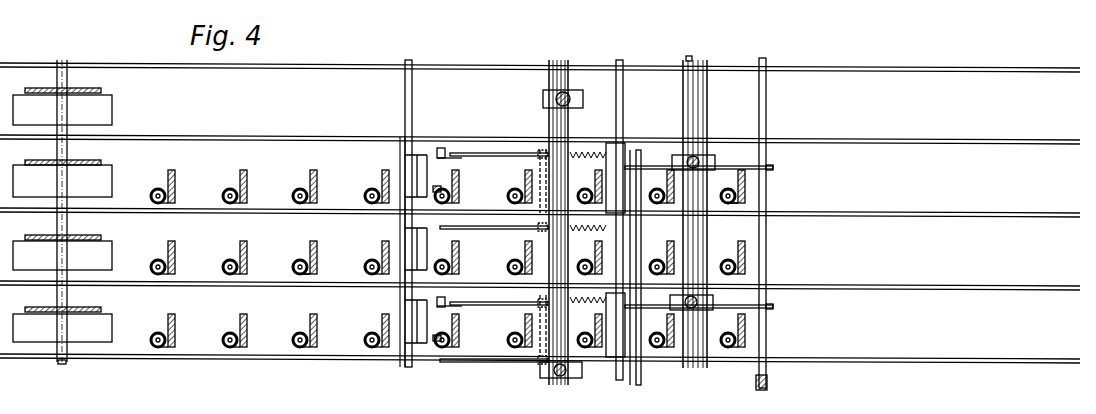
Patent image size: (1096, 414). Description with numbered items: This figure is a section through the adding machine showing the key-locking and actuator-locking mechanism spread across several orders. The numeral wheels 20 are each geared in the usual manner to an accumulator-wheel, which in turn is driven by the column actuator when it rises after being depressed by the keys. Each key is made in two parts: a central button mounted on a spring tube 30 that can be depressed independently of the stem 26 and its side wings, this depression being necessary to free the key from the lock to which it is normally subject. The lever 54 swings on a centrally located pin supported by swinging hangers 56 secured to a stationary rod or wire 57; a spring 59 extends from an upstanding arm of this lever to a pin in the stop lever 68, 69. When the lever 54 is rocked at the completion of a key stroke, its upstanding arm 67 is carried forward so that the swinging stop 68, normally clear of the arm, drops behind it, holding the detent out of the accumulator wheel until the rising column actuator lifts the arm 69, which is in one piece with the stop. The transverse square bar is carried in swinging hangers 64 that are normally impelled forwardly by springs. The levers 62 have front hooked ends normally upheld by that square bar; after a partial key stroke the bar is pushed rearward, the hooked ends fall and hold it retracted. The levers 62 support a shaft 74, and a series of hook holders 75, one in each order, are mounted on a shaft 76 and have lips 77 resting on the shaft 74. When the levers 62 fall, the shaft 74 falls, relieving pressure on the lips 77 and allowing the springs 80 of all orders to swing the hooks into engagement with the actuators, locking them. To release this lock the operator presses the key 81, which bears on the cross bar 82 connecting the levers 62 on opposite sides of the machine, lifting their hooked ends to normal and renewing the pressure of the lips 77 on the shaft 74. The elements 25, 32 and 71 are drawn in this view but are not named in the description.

The numeral wheel 20 is at (103, 118).
The bracket 25 is at (156, 259).
The stem 26 is at (312, 320).
The spring tube 30 is at (226, 257).
The rail 32 is at (150, 82).
The lever 54 is at (424, 152).
The swinging hanger 56 is at (433, 176).
The stationary rod or wire 57 is at (413, 108).
The spring 59 is at (522, 150).
The lever 62 is at (630, 167).
The swinging hanger 64 is at (584, 101).
The upstanding arm 67 is at (456, 160).
The swinging stop 68 is at (525, 155).
The arm 69 is at (468, 226).
The shaft 71 is at (690, 60).
The shaft 74 is at (640, 369).
The hook holder 75 is at (607, 146).
The shaft 76 is at (624, 112).
The lip 77 is at (632, 400).
The spring 80 is at (677, 246).
The releasing key 81 is at (768, 387).
The cross bar 82 is at (767, 101).